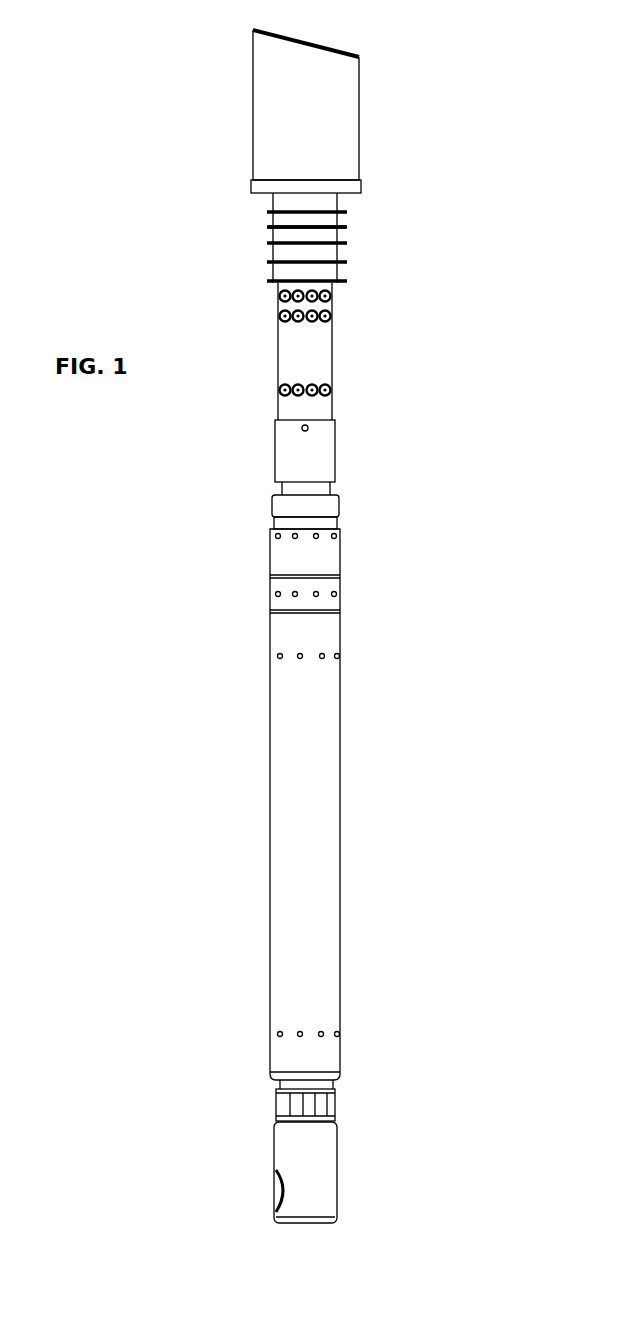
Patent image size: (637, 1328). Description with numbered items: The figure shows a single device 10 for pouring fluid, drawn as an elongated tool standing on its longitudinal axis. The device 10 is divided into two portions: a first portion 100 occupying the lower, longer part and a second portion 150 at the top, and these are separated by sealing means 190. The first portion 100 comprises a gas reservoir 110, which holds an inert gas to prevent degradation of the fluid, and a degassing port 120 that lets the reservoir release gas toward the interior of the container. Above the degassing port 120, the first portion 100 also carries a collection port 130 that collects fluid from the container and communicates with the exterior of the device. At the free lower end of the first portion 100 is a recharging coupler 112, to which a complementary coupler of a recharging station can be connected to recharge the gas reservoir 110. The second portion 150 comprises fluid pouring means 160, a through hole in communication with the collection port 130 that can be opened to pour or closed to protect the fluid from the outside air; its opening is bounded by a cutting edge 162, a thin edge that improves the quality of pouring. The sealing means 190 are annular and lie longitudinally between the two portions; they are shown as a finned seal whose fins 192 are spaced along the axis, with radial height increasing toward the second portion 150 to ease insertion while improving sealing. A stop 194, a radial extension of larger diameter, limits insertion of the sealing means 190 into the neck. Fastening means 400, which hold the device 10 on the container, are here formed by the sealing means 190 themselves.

The device for pouring fluid 10 is at (118, 546).
The first portion 100 is at (360, 753).
The gas reservoir 110 is at (318, 840).
The recharging coupler 112 is at (335, 1170).
The degassing port 120 is at (333, 390).
The collection port 130 is at (340, 284).
The second portion 150 is at (317, 102).
The fluid pouring means 160 is at (271, 95).
The cutting edge 162 is at (253, 30).
The sealing means 190 is at (344, 242).
The fins 192 is at (270, 227).
The stop 194 is at (257, 187).
The fastening means 400 is at (275, 238).